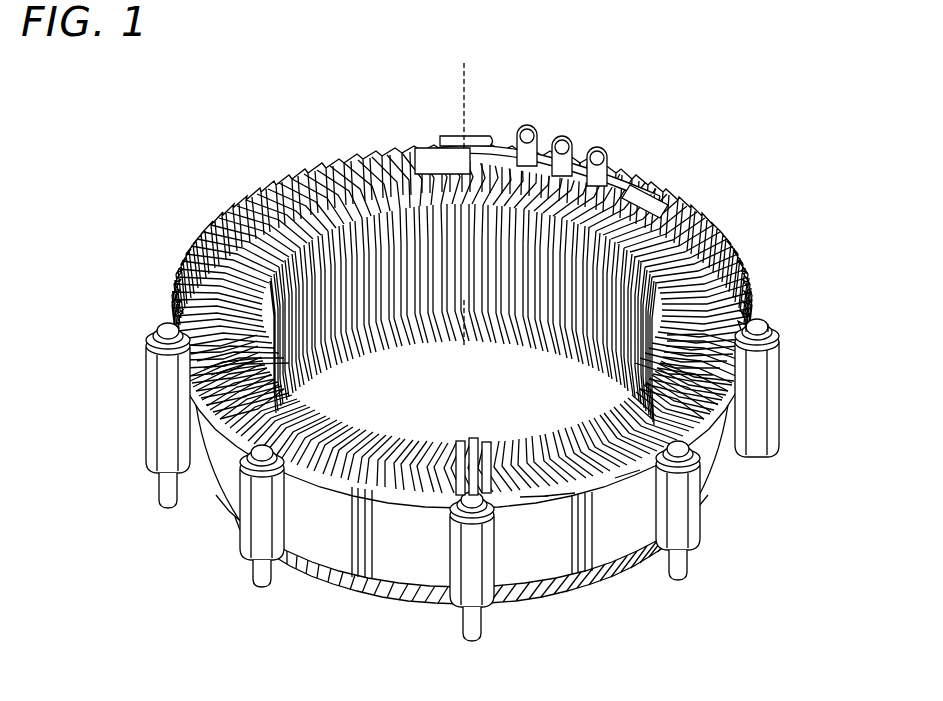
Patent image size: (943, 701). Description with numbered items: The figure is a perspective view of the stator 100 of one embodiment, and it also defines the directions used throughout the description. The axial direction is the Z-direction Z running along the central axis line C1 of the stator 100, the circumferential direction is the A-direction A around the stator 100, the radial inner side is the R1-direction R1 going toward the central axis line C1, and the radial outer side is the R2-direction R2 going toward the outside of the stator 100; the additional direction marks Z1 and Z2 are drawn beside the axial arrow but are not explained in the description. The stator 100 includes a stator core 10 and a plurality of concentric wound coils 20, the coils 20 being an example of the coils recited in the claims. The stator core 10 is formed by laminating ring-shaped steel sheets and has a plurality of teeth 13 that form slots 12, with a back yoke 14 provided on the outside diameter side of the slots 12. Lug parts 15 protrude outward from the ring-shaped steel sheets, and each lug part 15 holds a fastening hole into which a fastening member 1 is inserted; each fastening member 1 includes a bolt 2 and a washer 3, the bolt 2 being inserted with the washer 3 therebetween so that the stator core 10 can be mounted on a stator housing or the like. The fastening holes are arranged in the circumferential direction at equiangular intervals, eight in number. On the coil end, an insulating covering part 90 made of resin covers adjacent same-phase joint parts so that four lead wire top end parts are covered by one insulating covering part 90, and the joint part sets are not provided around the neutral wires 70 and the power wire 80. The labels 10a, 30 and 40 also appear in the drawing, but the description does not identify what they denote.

The stator 100 is at (187, 106).
The fastening member 1 is at (788, 306).
The bolt 2 is at (760, 318).
The washer 3 is at (774, 345).
The stator core 10 is at (708, 489).
The outer peripheral surface of stator core 10a is at (742, 470).
The slot 12 is at (560, 500).
The tooth 13 is at (535, 498).
The back yoke 14 is at (628, 495).
The lug part 15 is at (776, 405).
The concentric wound coil 20 is at (712, 248).
The insulating member 30 is at (397, 490).
The coil end 40 is at (421, 488).
The neutral wire 70 is at (488, 443).
The power wire 80 is at (455, 442).
The insulating covering part 90 is at (471, 440).
The central axis line C1 is at (468, 96).
The A-direction A is at (500, 665).
The R1-direction R1 is at (130, 630).
The R2-direction R2 is at (130, 630).
The Z-direction Z is at (820, 668).
The axial direction one side Z1 is at (809, 576).
The axial direction other side Z2 is at (810, 630).